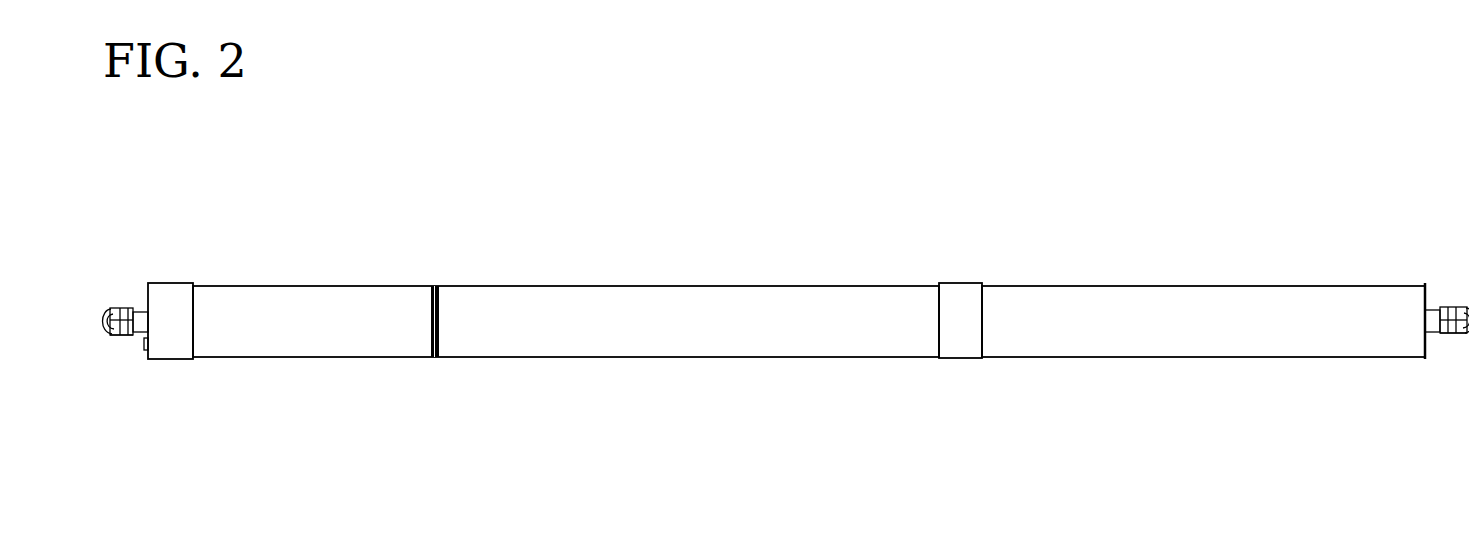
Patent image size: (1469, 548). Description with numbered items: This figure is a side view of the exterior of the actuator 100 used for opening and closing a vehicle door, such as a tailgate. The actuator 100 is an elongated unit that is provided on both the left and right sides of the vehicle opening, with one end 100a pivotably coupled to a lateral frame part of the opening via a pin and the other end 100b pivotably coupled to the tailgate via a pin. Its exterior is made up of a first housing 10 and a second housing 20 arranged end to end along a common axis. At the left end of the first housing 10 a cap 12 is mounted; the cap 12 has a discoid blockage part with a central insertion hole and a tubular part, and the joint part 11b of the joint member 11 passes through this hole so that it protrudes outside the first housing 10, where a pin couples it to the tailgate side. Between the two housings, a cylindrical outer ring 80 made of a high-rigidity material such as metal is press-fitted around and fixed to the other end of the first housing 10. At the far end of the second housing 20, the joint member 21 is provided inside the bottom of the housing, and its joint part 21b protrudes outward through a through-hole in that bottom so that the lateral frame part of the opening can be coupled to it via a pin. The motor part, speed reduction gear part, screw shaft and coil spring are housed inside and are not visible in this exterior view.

The actuator 100 is at (898, 216).
The first housing 10 is at (590, 286).
The second housing 20 is at (1198, 286).
The cylindrical outer ring 80 is at (958, 283).
The cap 12 is at (168, 360).
The joint member 11 is at (105, 297).
The joint part 11b is at (118, 308).
The joint member 21 is at (1462, 297).
The joint part 21b is at (1441, 307).
The one end 100a is at (1452, 337).
The other end 100b is at (117, 337).